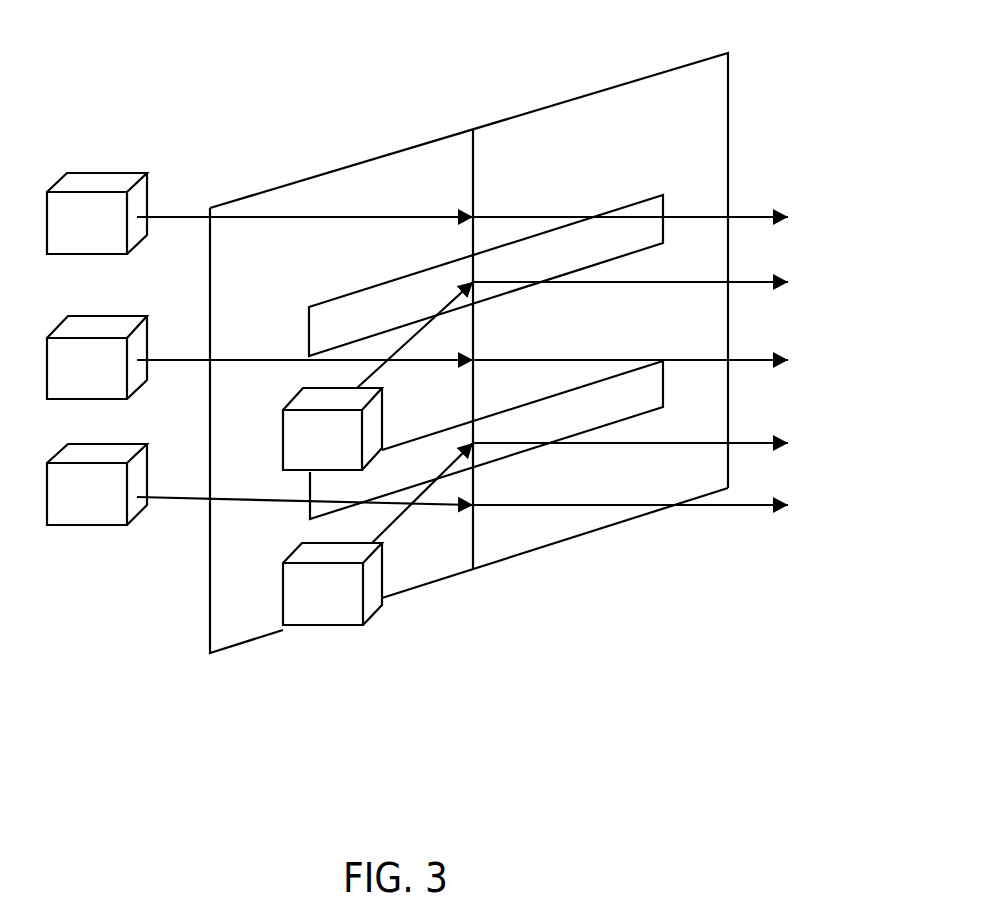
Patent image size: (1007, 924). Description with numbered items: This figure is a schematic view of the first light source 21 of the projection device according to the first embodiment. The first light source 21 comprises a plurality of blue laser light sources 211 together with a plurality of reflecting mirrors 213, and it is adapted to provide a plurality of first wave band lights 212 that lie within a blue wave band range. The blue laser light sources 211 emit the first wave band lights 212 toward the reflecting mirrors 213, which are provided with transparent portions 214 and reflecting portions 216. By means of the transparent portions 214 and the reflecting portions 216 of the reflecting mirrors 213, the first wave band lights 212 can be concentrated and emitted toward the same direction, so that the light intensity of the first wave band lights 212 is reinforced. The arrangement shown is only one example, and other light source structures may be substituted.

The first light source 21 is at (218, 69).
The blue laser light source 211 is at (92, 185).
The first wave band light 212 is at (748, 507).
The reflecting mirror 213 is at (350, 187).
The transparent portion 214 is at (474, 507).
The reflecting portion 216 is at (474, 443).